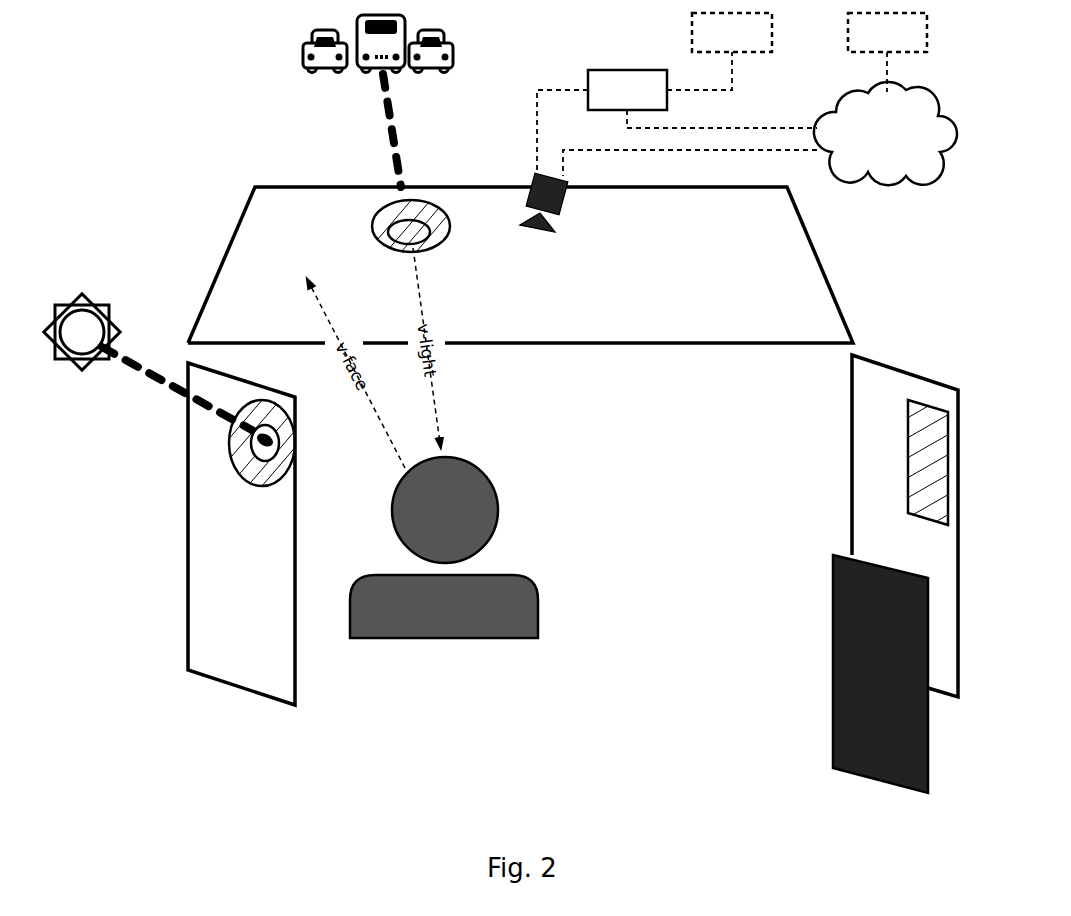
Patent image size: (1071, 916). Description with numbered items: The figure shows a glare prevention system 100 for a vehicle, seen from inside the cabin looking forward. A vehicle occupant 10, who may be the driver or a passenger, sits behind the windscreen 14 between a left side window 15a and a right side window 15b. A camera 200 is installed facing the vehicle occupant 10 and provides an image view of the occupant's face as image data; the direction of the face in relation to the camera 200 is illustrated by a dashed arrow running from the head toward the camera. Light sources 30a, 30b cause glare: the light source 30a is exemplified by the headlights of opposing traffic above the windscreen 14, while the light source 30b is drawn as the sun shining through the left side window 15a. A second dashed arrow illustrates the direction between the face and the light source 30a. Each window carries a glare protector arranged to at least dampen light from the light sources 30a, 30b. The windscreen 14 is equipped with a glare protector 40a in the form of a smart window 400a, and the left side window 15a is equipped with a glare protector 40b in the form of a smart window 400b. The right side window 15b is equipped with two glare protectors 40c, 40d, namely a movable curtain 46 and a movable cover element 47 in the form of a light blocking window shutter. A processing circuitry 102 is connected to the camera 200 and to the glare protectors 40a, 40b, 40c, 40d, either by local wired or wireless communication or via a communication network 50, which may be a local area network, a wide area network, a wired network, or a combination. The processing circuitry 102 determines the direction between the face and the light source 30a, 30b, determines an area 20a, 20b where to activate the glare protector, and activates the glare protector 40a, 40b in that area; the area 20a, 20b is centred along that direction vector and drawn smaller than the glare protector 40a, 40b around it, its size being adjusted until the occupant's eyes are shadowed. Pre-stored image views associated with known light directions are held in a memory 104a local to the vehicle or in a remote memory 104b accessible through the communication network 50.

The glare prevention system 100 is at (160, 105).
The windscreen 14 is at (312, 218).
The smart window 400a is at (792, 295).
The light source 30a is at (478, 60).
The light source 30b is at (103, 292).
The glare protector 40a is at (372, 200).
The area 20b is at (412, 220).
The left side window 15a is at (226, 518).
The smart window 400b is at (260, 528).
The glare protector 40b is at (232, 468).
The area 20a is at (242, 446).
The right side window 15b is at (877, 401).
The glare protector 40c is at (929, 429).
The movable curtain 46 is at (927, 464).
The movable cover element 47 is at (825, 722).
The glare protector 40d is at (825, 636).
The vehicle occupant 10 is at (510, 530).
The camera 200 is at (574, 220).
The processing circuitry 102 is at (627, 90).
The memory 104a is at (732, 32).
The remote memory 104b is at (887, 32).
The communication network 50 is at (885, 133).